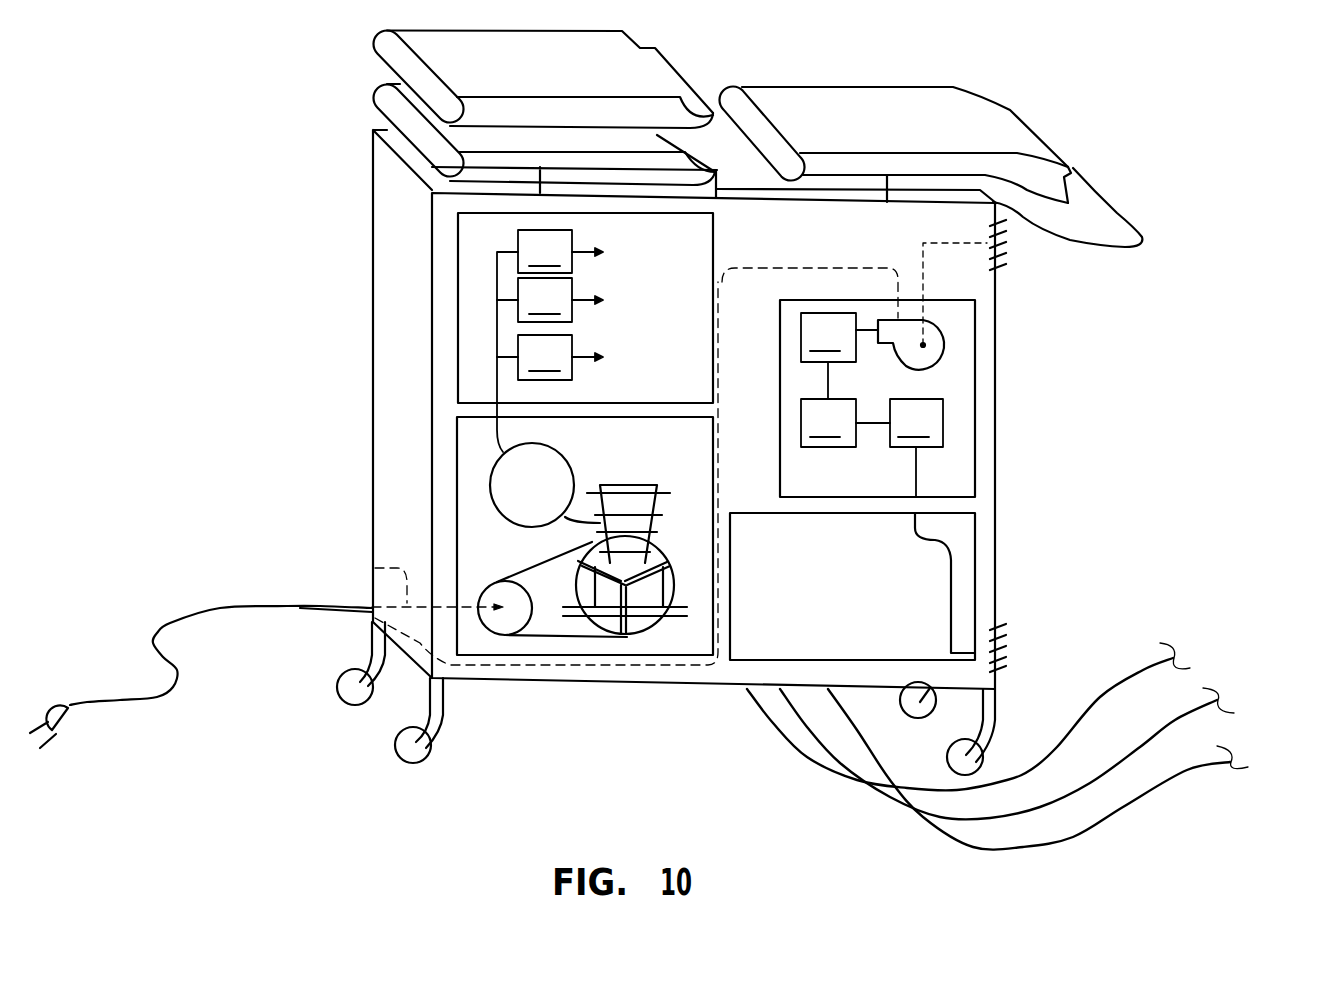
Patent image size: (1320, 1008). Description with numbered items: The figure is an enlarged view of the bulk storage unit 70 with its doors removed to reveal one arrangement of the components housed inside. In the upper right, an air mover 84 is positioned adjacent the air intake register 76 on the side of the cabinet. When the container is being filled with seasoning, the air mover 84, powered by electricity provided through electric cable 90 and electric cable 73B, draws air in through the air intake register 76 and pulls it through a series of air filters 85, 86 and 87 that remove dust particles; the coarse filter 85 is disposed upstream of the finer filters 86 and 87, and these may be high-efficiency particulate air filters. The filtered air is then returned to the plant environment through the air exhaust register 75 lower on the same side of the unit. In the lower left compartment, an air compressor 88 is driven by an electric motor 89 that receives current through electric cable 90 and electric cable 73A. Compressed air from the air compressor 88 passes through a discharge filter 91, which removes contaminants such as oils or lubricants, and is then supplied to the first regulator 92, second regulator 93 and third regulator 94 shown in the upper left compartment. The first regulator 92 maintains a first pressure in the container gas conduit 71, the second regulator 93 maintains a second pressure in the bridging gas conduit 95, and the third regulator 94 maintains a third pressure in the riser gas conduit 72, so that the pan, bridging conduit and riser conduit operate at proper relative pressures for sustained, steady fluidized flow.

The bulk storage unit 70 is at (739, 402).
The container gas conduit 71 is at (1133, 668).
The riser gas conduit 72 is at (1143, 745).
The electric cable 73A is at (367, 569).
The electric cable 73B is at (788, 263).
The air exhaust register 75 is at (1022, 630).
The air intake register 76 is at (950, 220).
The air mover 84 is at (975, 343).
The air filter 85 is at (839, 356).
The air filter 86 is at (845, 423).
The air filter 87 is at (916, 448).
The air compressor 88 is at (660, 520).
The electric motor 89 is at (490, 582).
The electric cable 90 is at (158, 606).
The discharge filter 91 is at (572, 463).
The first regulator 92 is at (587, 341).
The second regulator 93 is at (587, 300).
The third regulator 94 is at (587, 357).
The bridging gas conduit 95 is at (1217, 772).